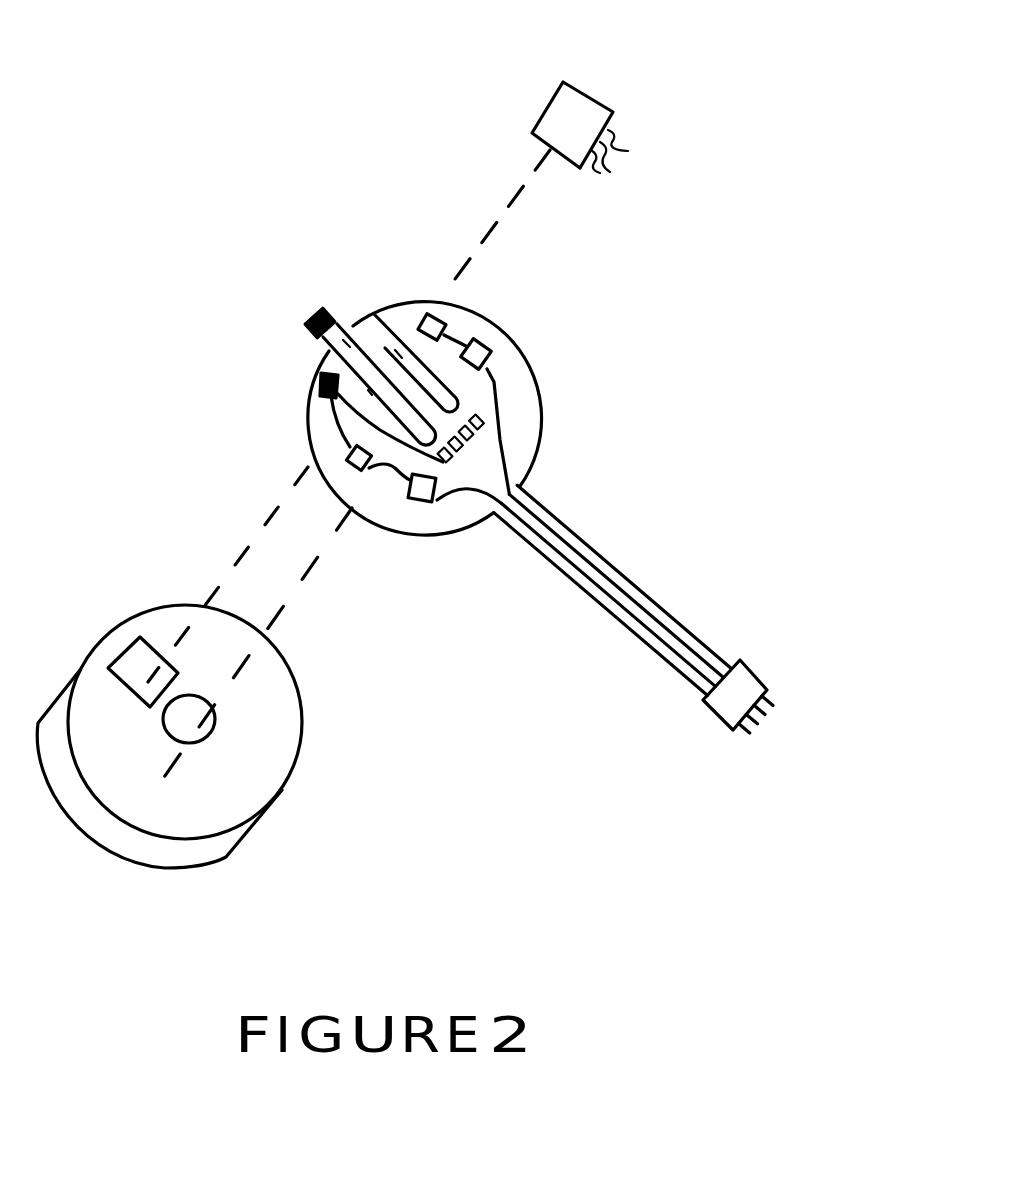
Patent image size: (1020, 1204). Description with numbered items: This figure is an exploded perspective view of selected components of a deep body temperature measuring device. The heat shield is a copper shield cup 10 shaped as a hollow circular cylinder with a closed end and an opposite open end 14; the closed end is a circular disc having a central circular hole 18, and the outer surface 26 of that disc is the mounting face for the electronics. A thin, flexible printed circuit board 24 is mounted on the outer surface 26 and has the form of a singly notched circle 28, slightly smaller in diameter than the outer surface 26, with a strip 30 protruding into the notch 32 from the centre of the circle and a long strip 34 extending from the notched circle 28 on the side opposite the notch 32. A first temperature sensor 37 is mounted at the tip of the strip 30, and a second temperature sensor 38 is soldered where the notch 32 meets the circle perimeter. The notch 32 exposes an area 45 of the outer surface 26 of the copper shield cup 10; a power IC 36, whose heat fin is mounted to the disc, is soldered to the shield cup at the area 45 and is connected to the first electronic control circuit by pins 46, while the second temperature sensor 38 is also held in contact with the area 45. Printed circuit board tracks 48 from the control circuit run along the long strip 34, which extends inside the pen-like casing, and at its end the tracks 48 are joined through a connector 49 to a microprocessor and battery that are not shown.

The copper shield cup 10 is at (220, 845).
The open end 14 is at (127, 867).
The central circular hole 18 is at (173, 712).
The printed circuit board 24 is at (543, 420).
The outer surface 26 is at (253, 787).
The singly notched circle 28 is at (515, 383).
The strip 30 is at (385, 348).
The notch 32 is at (370, 313).
The long strip 34 is at (630, 578).
The power IC 36 is at (580, 127).
The first temperature sensor 37 is at (313, 328).
The second temperature sensor 38 is at (312, 398).
The area 45 is at (126, 665).
The pins 46 is at (628, 150).
The printed circuit board tracks 48 is at (483, 500).
The connector 49 is at (712, 712).